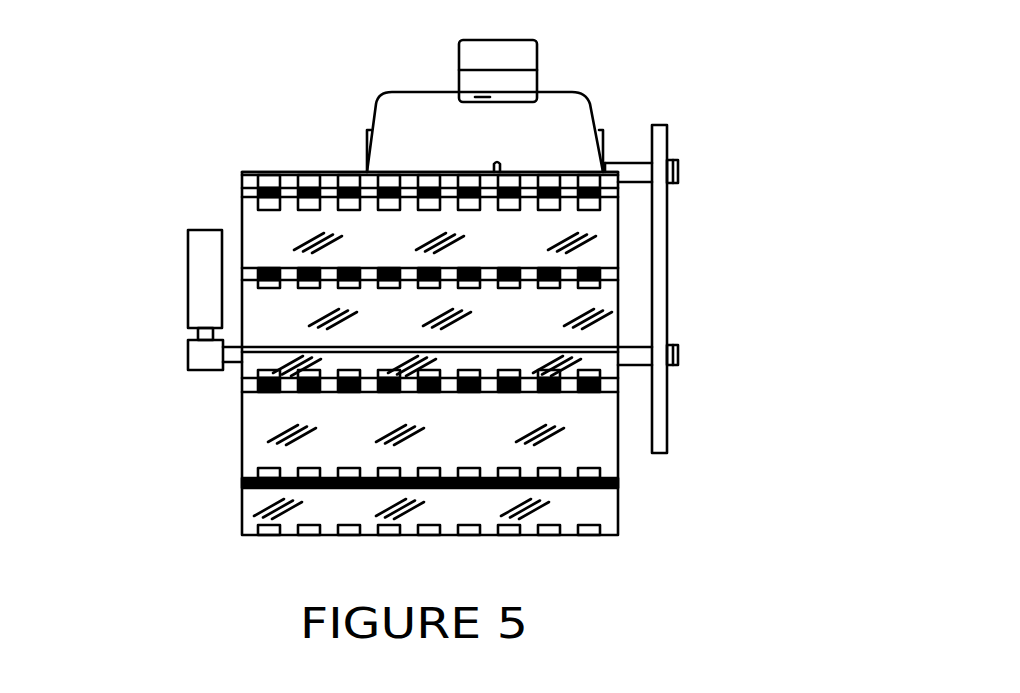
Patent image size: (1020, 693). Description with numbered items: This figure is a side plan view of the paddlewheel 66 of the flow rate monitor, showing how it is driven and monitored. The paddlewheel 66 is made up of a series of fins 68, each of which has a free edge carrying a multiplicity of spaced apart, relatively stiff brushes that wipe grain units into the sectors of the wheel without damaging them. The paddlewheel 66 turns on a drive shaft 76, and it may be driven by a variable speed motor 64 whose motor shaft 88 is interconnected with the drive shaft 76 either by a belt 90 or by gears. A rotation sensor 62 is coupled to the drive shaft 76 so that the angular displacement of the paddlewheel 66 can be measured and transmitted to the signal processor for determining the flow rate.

The rotation sensor 62 is at (198, 283).
The variable speed motor 64 is at (547, 94).
The paddlewheel 66 is at (360, 153).
The fins 68 is at (344, 348).
The drive shaft 76 is at (775, 388).
The motor shaft 88 is at (747, 134).
The belt 90 is at (714, 289).